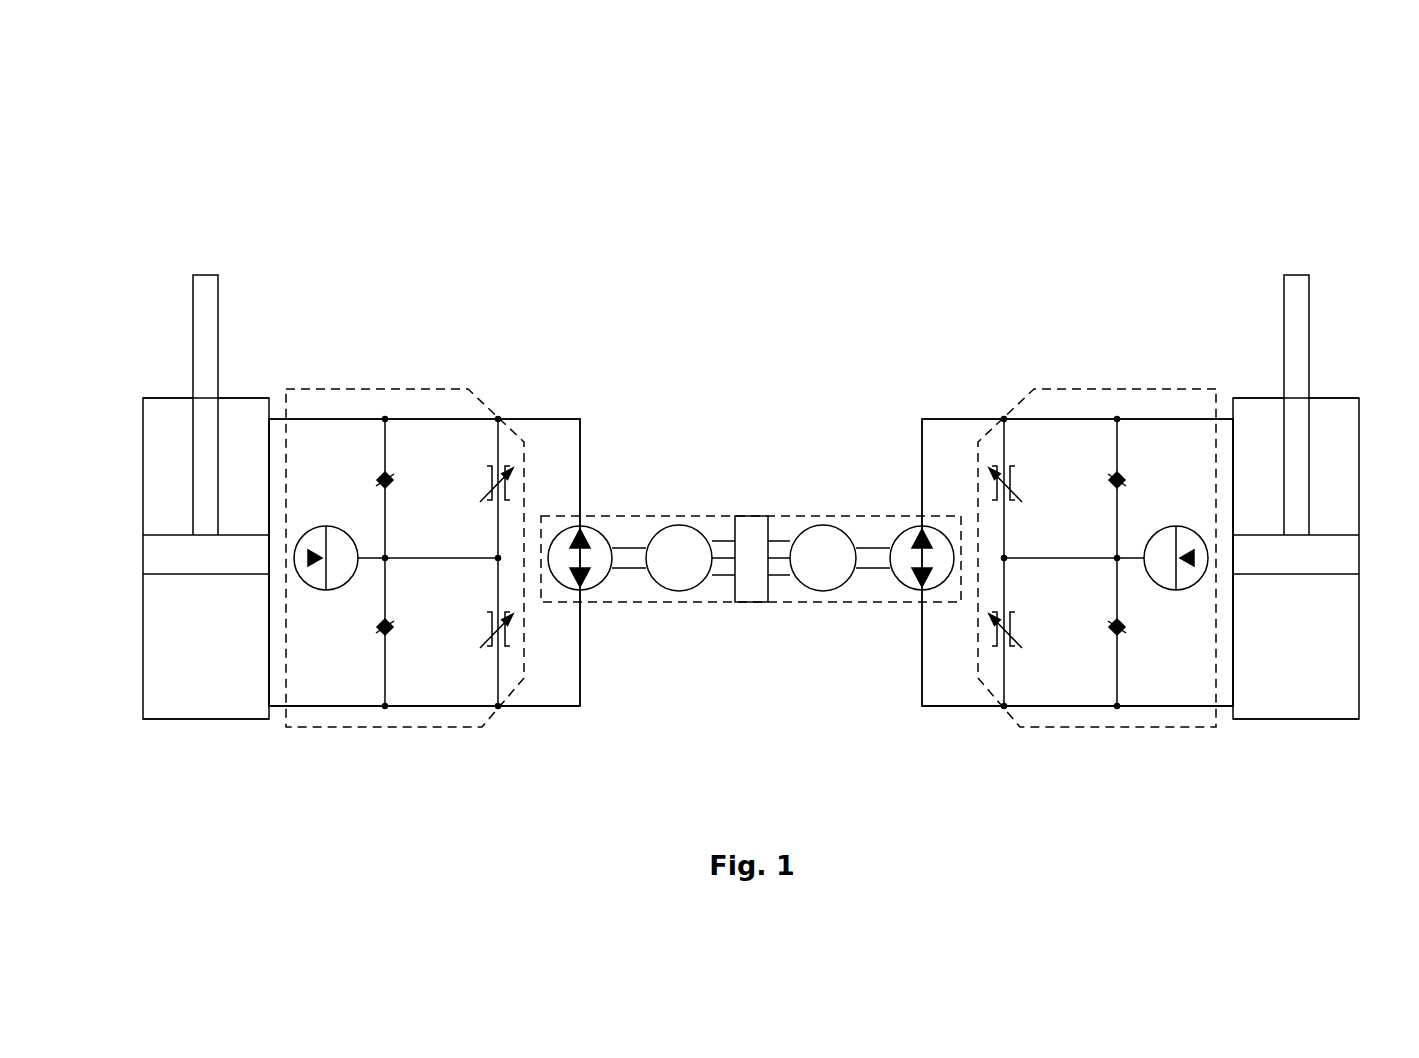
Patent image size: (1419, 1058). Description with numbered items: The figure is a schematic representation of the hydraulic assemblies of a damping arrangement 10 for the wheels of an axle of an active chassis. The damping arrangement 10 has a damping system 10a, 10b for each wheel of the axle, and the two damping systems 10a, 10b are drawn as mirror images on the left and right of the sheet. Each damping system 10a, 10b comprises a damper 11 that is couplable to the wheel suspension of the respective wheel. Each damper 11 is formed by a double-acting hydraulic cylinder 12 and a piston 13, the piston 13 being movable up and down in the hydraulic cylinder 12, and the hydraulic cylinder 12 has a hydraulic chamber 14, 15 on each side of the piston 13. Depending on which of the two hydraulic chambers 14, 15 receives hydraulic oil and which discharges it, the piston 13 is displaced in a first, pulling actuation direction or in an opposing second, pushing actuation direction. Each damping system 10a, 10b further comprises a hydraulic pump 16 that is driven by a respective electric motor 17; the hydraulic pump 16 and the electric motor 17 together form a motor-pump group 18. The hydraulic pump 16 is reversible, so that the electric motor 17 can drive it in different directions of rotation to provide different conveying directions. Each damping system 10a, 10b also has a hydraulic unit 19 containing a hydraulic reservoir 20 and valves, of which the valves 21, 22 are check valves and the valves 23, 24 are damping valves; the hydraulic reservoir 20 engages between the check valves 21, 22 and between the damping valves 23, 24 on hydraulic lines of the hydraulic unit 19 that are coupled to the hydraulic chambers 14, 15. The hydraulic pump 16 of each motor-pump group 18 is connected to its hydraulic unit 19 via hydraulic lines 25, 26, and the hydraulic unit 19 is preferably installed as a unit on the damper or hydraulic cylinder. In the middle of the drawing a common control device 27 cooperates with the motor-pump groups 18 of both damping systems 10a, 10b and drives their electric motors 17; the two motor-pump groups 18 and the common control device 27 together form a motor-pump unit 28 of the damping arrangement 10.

The damping arrangement 10 is at (550, 157).
The damping system 10a is at (530, 240).
The damping system 10b is at (1077, 431).
The damper 11 is at (243, 308).
The hydraulic cylinder 12 is at (137, 375).
The piston 13 is at (172, 560).
The hydraulic chamber 14 is at (172, 482).
The hydraulic chamber 15 is at (172, 650).
The hydraulic pump 16 is at (603, 593).
The electric motor 17 is at (703, 603).
The motor-pump group 18 is at (703, 515).
The hydraulic unit 19 is at (387, 389).
The hydraulic reservoir 20 is at (325, 526).
The check valve 21 is at (392, 478).
The check valve 22 is at (392, 625).
The damping valve 23 is at (482, 500).
The damping valve 24 is at (482, 646).
The hydraulic line 25 is at (538, 419).
The hydraulic line 26 is at (530, 708).
The common control device 27 is at (752, 618).
The motor-pump unit 28 is at (687, 432).